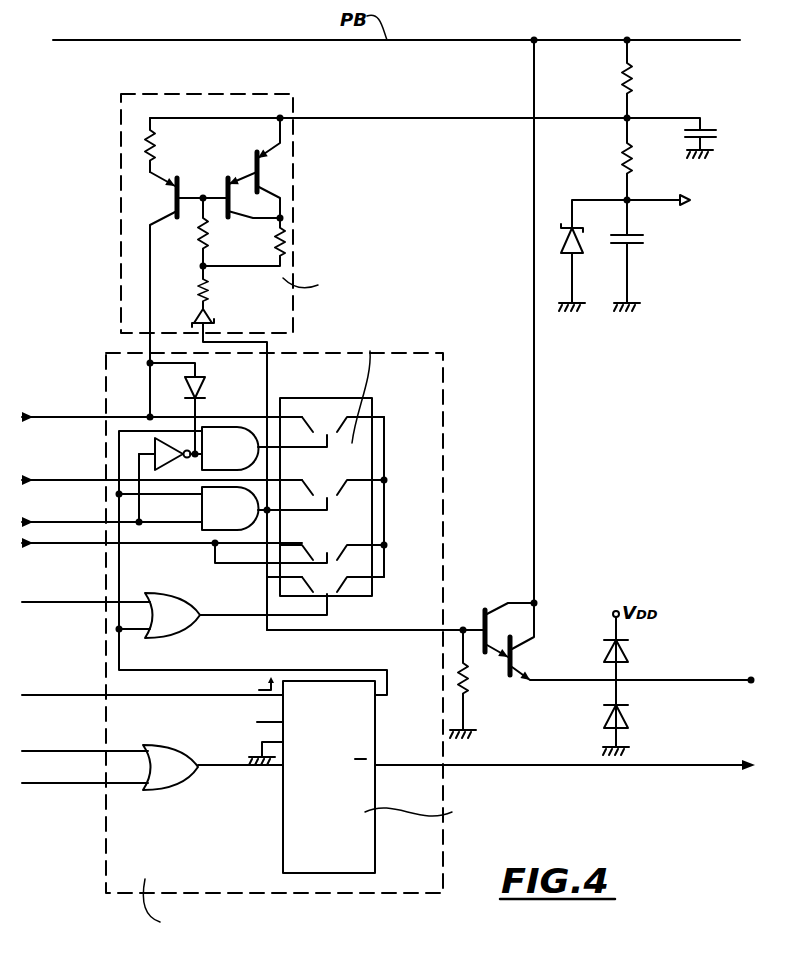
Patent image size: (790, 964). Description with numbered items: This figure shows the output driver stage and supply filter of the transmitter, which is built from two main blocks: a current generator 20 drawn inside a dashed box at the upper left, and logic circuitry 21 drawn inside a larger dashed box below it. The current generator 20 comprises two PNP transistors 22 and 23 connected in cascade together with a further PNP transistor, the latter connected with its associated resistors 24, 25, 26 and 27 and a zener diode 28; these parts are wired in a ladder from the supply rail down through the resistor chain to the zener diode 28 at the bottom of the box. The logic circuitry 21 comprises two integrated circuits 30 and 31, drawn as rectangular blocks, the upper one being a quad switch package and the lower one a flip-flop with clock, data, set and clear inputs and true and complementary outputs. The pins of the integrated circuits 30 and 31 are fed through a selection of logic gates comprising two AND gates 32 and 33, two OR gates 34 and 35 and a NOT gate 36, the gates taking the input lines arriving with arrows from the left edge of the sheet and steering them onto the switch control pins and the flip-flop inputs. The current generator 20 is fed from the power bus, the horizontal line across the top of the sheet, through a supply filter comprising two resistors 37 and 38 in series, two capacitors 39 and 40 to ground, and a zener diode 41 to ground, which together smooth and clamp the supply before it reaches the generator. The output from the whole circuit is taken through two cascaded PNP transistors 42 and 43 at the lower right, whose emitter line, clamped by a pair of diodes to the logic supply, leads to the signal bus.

The current generator 20 is at (121, 140).
The logic circuitry 21 is at (106, 365).
The PNP transistor 22 is at (226, 185).
The PNP transistor 23 is at (254, 164).
The resistor 24 is at (164, 145).
The resistor 25 is at (186, 294).
The resistor 26 is at (244, 242).
The resistor 27 is at (216, 287).
The zener diode 28 is at (218, 469).
The integrated circuit 30 is at (372, 408).
The integrated circuit 31 is at (375, 735).
The AND gate 32 is at (264, 448).
The AND gate 33 is at (264, 508).
The OR gate 34 is at (170, 606).
The OR gate 35 is at (170, 757).
The NOT gate 36 is at (166, 446).
The resistor 37 is at (622, 78).
The resistor 38 is at (622, 160).
The capacitor 39 is at (710, 128).
The capacitor 40 is at (634, 255).
The zener diode 41 is at (582, 255).
The PNP transistor 42 is at (488, 612).
The PNP transistor 43 is at (513, 659).